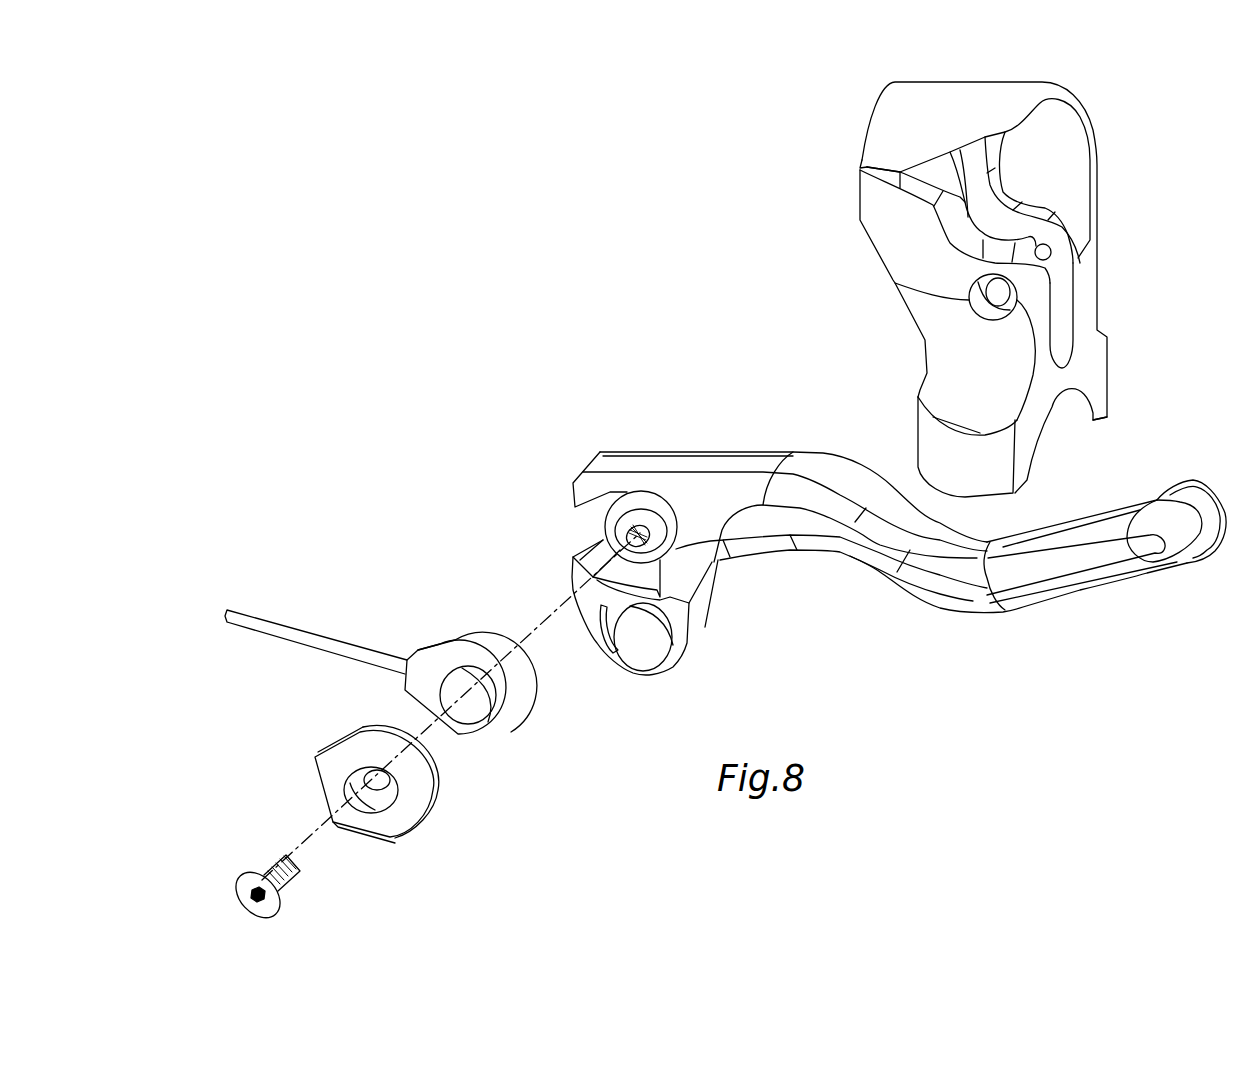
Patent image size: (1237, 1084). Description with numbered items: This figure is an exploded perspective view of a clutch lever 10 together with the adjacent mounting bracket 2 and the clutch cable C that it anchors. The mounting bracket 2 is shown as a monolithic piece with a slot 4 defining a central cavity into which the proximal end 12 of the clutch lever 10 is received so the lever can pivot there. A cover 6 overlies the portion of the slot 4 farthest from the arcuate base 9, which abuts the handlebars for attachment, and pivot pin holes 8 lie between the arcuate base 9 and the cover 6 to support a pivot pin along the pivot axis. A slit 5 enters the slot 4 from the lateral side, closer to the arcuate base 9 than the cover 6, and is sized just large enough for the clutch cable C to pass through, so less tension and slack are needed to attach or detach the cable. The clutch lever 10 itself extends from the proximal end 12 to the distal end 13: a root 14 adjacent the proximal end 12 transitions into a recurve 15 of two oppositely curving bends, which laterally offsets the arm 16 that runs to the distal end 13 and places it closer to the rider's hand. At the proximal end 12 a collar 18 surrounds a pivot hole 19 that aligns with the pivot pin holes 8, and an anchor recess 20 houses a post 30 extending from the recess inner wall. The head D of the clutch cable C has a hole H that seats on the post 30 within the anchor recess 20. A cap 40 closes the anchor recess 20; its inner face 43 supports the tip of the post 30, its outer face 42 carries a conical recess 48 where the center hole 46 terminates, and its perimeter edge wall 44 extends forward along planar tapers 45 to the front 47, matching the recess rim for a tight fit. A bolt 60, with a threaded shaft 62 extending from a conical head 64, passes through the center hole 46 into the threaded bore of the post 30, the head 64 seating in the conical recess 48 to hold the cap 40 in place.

The mounting bracket 2 is at (1117, 182).
The slot 4 is at (1065, 300).
The slit 5 is at (865, 168).
The cover 6 is at (898, 110).
The pivot pin holes 8 is at (1049, 259).
The arcuate base 9 is at (1042, 433).
The clutch lever 10 is at (655, 424).
The proximal end 12 is at (580, 587).
The distal end 13 is at (1187, 538).
The root 14 is at (708, 482).
The recurve 15 is at (875, 522).
The arm 16 is at (1068, 558).
The collar 18 is at (663, 668).
The pivot hole 19 is at (633, 643).
The anchor recess 20 is at (572, 534).
The post 30 is at (657, 567).
The cap 40 is at (438, 822).
The outer face 42 is at (397, 820).
The inner face 43 is at (433, 790).
The edge wall 44 is at (383, 737).
The planar tapers 45 is at (337, 743).
The center hole 46 is at (360, 787).
The front 47 is at (370, 810).
The conical recess 48 is at (323, 798).
The bolt 60 is at (241, 858).
The threaded shaft 62 is at (277, 863).
The head 64 is at (238, 897).
The clutch cable C is at (320, 637).
The head D is at (452, 657).
The hole H is at (472, 710).